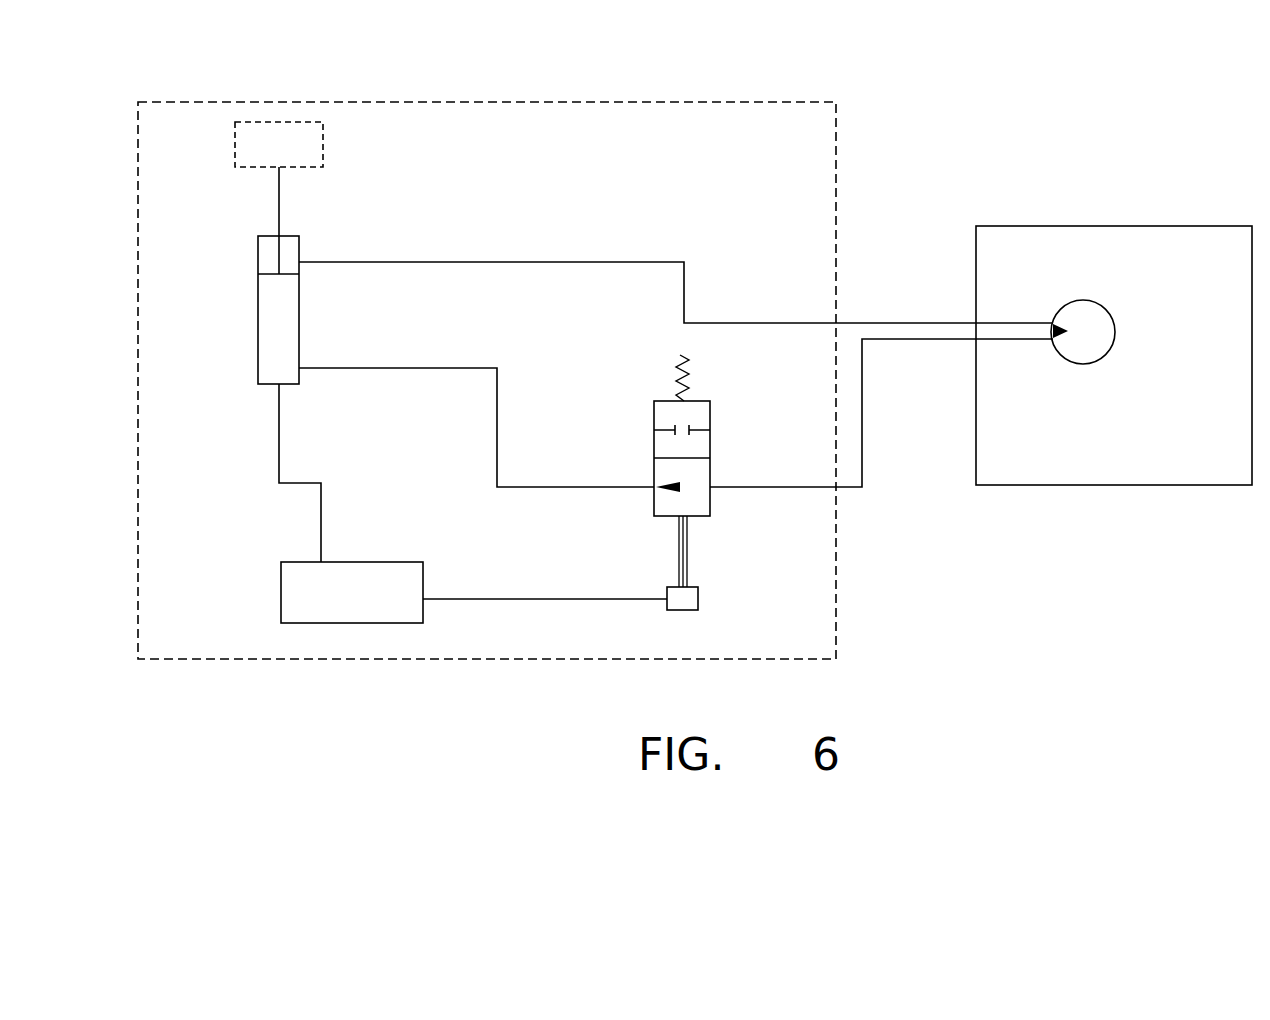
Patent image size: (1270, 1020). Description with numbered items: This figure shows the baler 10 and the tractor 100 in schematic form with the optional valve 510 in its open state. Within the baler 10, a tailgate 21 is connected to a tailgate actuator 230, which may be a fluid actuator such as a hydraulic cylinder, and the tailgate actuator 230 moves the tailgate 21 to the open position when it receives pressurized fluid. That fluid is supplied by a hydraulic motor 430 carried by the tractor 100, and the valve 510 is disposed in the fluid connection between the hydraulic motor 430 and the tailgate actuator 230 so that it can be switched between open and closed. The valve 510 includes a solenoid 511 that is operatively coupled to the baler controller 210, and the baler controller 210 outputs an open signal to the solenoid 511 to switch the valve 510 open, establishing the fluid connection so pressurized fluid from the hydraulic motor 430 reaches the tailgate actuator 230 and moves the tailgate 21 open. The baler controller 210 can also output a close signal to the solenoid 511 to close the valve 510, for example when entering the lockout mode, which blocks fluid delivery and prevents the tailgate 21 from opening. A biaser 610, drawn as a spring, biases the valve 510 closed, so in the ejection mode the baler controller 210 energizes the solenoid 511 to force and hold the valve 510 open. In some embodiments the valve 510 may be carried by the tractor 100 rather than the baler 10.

The baler 10 is at (326, 673).
The tailgate 21 is at (323, 150).
The tailgate actuator 230 is at (258, 335).
The baler controller 210 is at (378, 562).
The valve 510 is at (654, 445).
The solenoid 511 is at (698, 603).
The biaser 610 is at (687, 384).
The tractor 100 is at (1213, 216).
The hydraulic motor 430 is at (1112, 340).